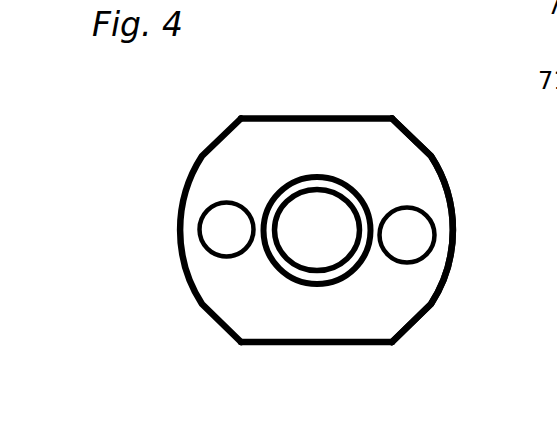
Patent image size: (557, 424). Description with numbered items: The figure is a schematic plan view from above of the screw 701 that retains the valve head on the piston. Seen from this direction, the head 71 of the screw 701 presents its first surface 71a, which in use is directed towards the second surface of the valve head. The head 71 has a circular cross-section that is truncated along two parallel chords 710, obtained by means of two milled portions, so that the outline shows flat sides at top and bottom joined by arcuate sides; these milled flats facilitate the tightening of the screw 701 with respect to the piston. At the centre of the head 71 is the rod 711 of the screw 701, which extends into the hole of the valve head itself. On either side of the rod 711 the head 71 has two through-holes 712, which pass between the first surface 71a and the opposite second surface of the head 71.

The screw 701 is at (153, 174).
The head 71 is at (471, 250).
The first surface 71a is at (395, 173).
The parallel chords 710 is at (313, 116).
The rod 711 is at (305, 218).
The through-holes 712 is at (224, 229).